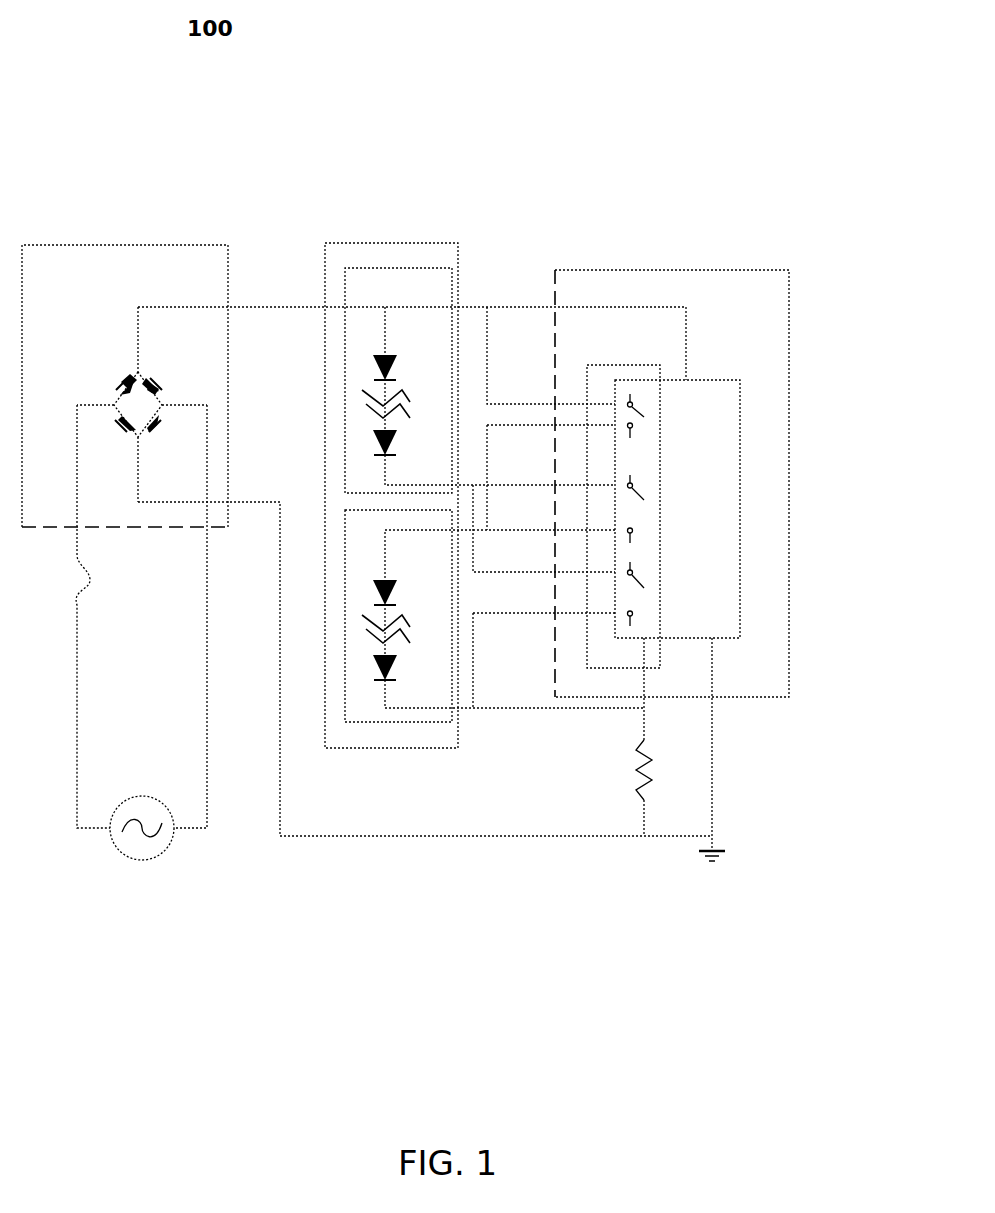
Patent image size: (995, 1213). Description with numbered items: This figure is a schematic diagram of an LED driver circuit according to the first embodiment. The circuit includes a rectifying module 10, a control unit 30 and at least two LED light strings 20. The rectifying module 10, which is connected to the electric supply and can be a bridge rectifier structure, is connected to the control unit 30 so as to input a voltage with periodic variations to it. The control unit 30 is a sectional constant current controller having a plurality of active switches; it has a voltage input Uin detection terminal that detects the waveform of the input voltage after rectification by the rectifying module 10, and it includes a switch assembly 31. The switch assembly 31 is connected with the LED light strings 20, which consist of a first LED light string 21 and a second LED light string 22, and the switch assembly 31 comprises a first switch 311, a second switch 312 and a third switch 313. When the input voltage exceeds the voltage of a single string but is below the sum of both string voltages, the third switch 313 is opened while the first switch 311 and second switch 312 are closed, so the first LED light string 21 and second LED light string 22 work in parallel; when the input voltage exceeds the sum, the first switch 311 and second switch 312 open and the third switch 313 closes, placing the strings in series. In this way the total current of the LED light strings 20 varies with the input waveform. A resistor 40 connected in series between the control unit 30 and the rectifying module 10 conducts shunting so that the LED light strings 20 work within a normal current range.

The rectifying module 10 is at (103, 240).
The LED light strings 20 is at (390, 243).
The first LED light string 21 is at (425, 265).
The second LED light string 22 is at (432, 723).
The control unit 30 is at (752, 262).
The switch assembly 31 is at (647, 360).
The first switch 311 is at (645, 418).
The second switch 312 is at (645, 600).
The third switch 313 is at (645, 512).
The current sensing resistor R1 40 is at (622, 772).